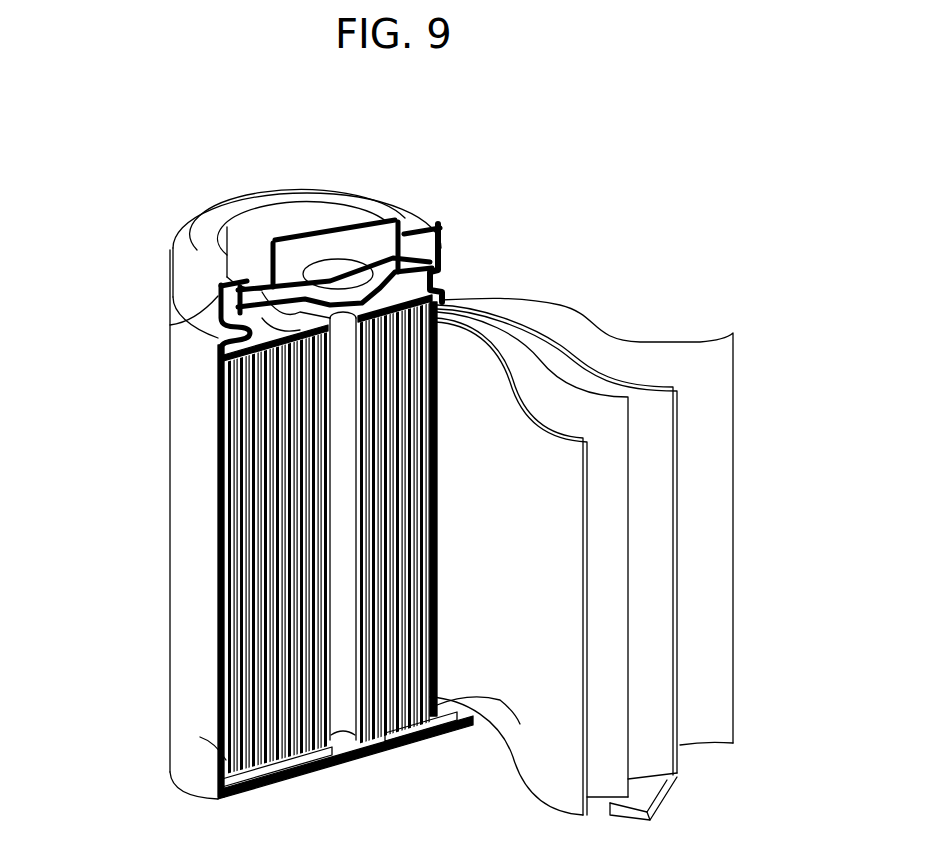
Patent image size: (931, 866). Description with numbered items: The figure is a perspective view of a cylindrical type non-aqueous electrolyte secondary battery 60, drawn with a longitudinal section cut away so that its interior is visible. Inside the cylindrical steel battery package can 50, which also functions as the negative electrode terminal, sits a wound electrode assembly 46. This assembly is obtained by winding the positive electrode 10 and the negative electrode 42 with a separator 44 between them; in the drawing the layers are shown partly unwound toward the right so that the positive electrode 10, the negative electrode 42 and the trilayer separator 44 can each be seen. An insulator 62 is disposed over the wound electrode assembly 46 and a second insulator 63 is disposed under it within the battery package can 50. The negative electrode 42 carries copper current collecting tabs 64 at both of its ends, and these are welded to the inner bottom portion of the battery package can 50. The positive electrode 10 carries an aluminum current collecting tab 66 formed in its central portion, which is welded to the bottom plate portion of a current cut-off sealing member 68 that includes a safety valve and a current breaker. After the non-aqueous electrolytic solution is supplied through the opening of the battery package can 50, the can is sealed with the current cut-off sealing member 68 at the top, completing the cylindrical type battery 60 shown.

The cylindrical type battery 60 is at (465, 111).
The current cut-off sealing member 68 is at (303, 215).
The current collecting tab 66 is at (178, 323).
The insulator 62 is at (222, 361).
The wound electrode assembly 46 is at (216, 539).
The battery package can 50 is at (190, 612).
The insulator 63 is at (270, 762).
The separator 44 is at (695, 360).
The positive electrode 10 is at (562, 553).
The negative electrode 42 is at (653, 663).
The current collecting tabs 64 is at (643, 799).